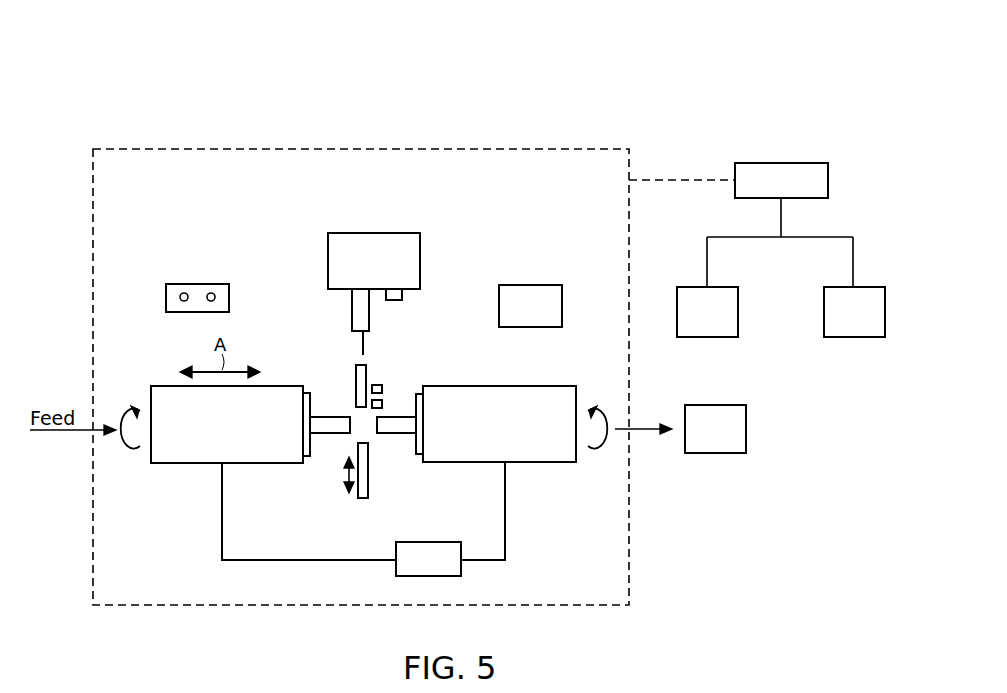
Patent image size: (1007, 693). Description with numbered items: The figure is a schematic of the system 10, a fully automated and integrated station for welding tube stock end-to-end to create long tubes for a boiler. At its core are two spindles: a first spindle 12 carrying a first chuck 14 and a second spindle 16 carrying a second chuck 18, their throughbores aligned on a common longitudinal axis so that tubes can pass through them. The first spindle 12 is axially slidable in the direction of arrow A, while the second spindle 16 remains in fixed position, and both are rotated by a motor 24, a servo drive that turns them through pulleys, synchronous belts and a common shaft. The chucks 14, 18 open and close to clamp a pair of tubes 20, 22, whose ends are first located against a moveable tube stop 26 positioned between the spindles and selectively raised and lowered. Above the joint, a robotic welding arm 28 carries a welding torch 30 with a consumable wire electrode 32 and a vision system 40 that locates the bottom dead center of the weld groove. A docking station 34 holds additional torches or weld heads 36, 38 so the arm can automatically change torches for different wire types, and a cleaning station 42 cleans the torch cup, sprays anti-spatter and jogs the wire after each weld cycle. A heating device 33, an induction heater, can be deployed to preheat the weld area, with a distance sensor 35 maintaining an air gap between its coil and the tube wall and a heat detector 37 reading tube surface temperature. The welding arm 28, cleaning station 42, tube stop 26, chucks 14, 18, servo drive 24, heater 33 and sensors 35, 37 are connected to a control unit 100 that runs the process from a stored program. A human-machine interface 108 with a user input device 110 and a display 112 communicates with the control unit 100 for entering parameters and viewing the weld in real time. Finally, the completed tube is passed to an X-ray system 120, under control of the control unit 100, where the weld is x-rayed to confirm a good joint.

The system 10 is at (728, 62).
The first spindle 12 is at (215, 436).
The first chuck 14 is at (312, 392).
The second spindle 16 is at (488, 436).
The second chuck 18 is at (417, 398).
The tube 20 is at (328, 425).
The tube 22 is at (377, 429).
The motor 24 is at (416, 570).
The tube stop 26 is at (369, 485).
The robotic welding arm 28 is at (361, 272).
The welding torch 30 is at (352, 316).
The consumable wire electrode 32 is at (366, 343).
The heating device 33 is at (356, 392).
The docking station 34 is at (197, 290).
The distance sensor 35 is at (384, 392).
The torch/weld head 36 is at (166, 298).
The heat detector 37 is at (383, 408).
The torch/weld head 38 is at (229, 298).
The vision system 40 is at (397, 301).
The cleaning station 42 is at (518, 316).
The control unit 100 is at (764, 191).
The human-machine interface 108 is at (867, 225).
The user input device 110 is at (690, 322).
The display 112 is at (837, 322).
The X-ray system 120 is at (698, 439).